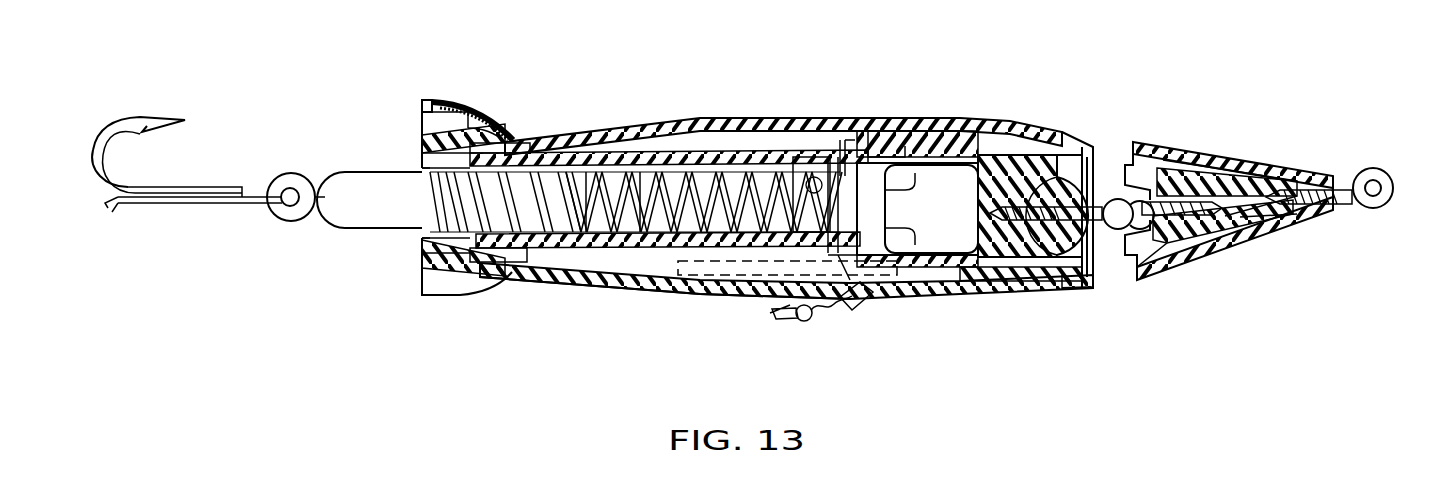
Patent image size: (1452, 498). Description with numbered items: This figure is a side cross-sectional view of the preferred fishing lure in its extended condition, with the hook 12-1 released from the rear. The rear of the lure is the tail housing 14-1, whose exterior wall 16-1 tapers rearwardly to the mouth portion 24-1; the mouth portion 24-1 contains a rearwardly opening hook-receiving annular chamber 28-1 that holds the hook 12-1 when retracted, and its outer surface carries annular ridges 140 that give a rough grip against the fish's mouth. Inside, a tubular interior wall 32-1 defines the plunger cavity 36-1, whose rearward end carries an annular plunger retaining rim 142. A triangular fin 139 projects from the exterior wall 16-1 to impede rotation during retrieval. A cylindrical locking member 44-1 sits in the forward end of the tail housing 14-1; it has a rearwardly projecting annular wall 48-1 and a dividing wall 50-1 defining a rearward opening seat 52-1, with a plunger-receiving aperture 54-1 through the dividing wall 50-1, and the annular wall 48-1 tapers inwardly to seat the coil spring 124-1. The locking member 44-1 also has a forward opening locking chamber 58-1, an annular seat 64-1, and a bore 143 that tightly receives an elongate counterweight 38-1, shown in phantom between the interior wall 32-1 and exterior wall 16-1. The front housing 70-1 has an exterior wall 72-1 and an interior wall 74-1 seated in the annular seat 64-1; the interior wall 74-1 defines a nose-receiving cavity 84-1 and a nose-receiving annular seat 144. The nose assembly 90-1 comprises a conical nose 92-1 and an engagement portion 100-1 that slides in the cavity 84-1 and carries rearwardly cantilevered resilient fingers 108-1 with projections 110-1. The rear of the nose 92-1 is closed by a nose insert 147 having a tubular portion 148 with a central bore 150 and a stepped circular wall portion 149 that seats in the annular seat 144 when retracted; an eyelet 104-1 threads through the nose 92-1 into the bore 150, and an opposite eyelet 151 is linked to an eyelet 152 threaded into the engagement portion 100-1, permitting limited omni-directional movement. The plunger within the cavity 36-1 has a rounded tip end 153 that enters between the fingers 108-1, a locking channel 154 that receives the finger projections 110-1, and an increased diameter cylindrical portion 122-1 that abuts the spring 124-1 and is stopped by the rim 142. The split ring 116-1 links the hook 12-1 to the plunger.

The hook 12-1 is at (221, 205).
The split ring 116-1 is at (283, 174).
The annular plunger retaining rim 142 is at (408, 224).
The hook-receiving annular chamber 28-1 is at (422, 112).
The mouth portion 24-1 is at (470, 112).
The annular ridges 140 is at (508, 122).
The increased diameter cylindrical portion 122-1 is at (424, 244).
The tail housing 14-1 is at (610, 125).
The exterior wall 16-1 is at (668, 148).
The spring 124-1 is at (694, 176).
The locking channel 154 is at (583, 250).
The forward rounded tip end 153 is at (640, 236).
The interior wall 32-1 is at (538, 277).
The plunger cavity 36-1 is at (667, 285).
The counterweight 38-1 is at (750, 282).
The annular wall 48-1 is at (744, 170).
The rearward opening seat 52-1 is at (816, 150).
The plunger-receiving aperture 54-1 is at (838, 140).
The locking chamber 58-1 is at (848, 140).
The locking member 44-1 is at (862, 150).
The annular seat 64-1 is at (905, 150).
The resilient fingers 108-1 is at (955, 135).
The projections 110-1 is at (900, 233).
The dividing wall 50-1 is at (866, 272).
The fin 139 is at (836, 318).
The bore 143 is at (853, 330).
The front housing 70-1 is at (985, 165).
The engagement portion 100-1 is at (1040, 168).
The interior wall 74-1 is at (988, 290).
The exterior wall 72-1 is at (1034, 297).
The nose-receiving cavity 84-1 is at (1070, 280).
The nose-receiving annular seat 144 is at (1100, 208).
The eyelet 151 is at (1133, 212).
The eyelet 152 is at (1128, 205).
The nose assembly 90-1 is at (1192, 140).
The conical nose 92-1 is at (1262, 150).
The nose insert 147 is at (1164, 258).
The circular wall portion 149 is at (1143, 268).
The central bore 150 is at (1236, 220).
The tubular portion 148 is at (1263, 215).
The eyelet 104-1 is at (1367, 176).